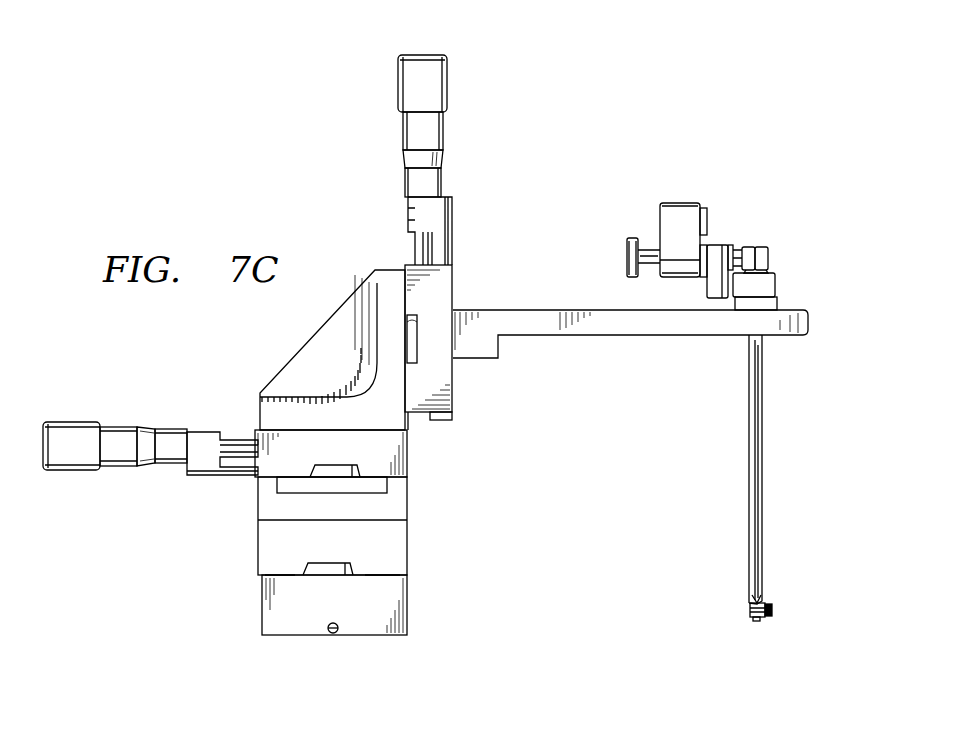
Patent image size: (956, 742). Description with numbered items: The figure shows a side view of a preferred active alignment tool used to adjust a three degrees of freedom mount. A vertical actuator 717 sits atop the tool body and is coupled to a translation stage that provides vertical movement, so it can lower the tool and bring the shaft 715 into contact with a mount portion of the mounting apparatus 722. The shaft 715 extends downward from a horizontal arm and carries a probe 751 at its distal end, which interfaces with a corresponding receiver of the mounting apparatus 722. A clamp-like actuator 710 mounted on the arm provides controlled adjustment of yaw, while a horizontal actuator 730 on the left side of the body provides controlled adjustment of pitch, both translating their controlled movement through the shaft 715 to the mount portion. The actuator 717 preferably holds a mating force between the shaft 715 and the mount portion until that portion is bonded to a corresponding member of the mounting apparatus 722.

The actuator 717 is at (398, 85).
The actuator 730 is at (73, 422).
The actuator 710 is at (682, 203).
The shaft 715 is at (750, 465).
The probe 751 is at (755, 602).
The mounting apparatus 722 is at (742, 620).